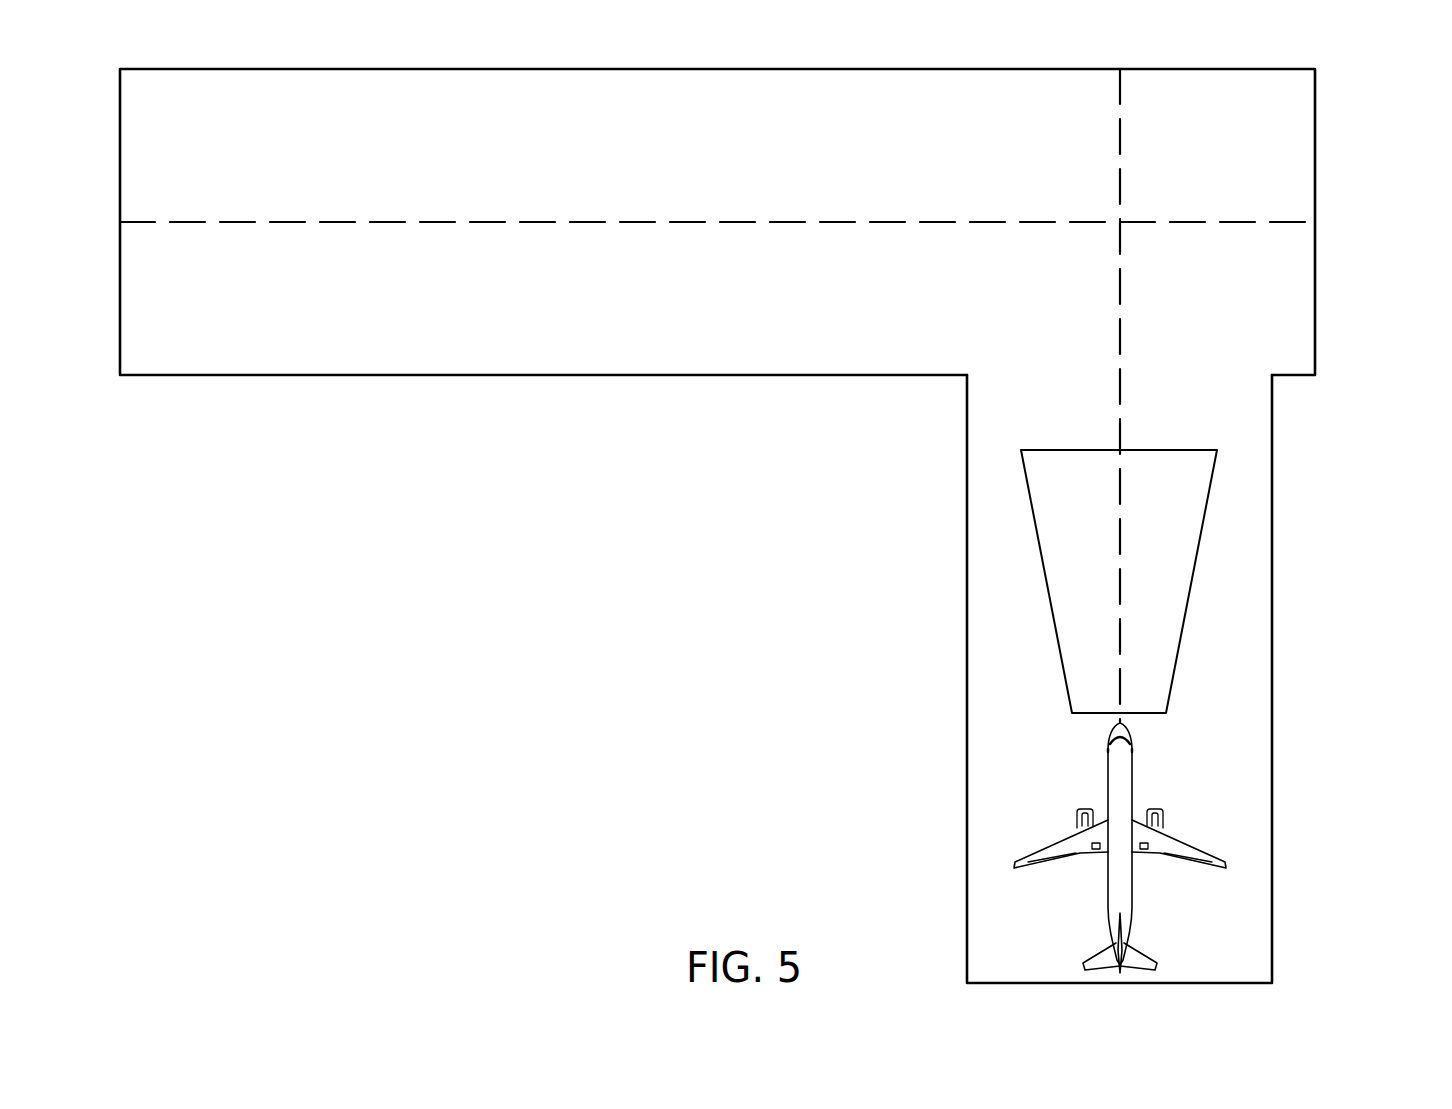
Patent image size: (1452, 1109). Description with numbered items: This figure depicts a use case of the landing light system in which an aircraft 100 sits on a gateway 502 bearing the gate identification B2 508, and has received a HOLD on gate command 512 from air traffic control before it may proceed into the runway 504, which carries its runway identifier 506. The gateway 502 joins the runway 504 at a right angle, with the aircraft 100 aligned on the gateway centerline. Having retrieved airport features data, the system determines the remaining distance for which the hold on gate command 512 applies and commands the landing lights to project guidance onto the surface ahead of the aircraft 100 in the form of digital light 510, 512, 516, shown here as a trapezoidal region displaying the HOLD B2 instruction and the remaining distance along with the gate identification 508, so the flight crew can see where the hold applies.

The aircraft 100 is at (1131, 885).
The gateway 502 is at (1272, 612).
The runway 13R 504 is at (1315, 127).
The runway identifier 506 is at (1368, 223).
The gate identification 508 is at (922, 406).
The projected digital light guidance 510 is at (1193, 455).
The hold on gate command 512 is at (1160, 497).
The projected digital light guidance 516 is at (1120, 651).